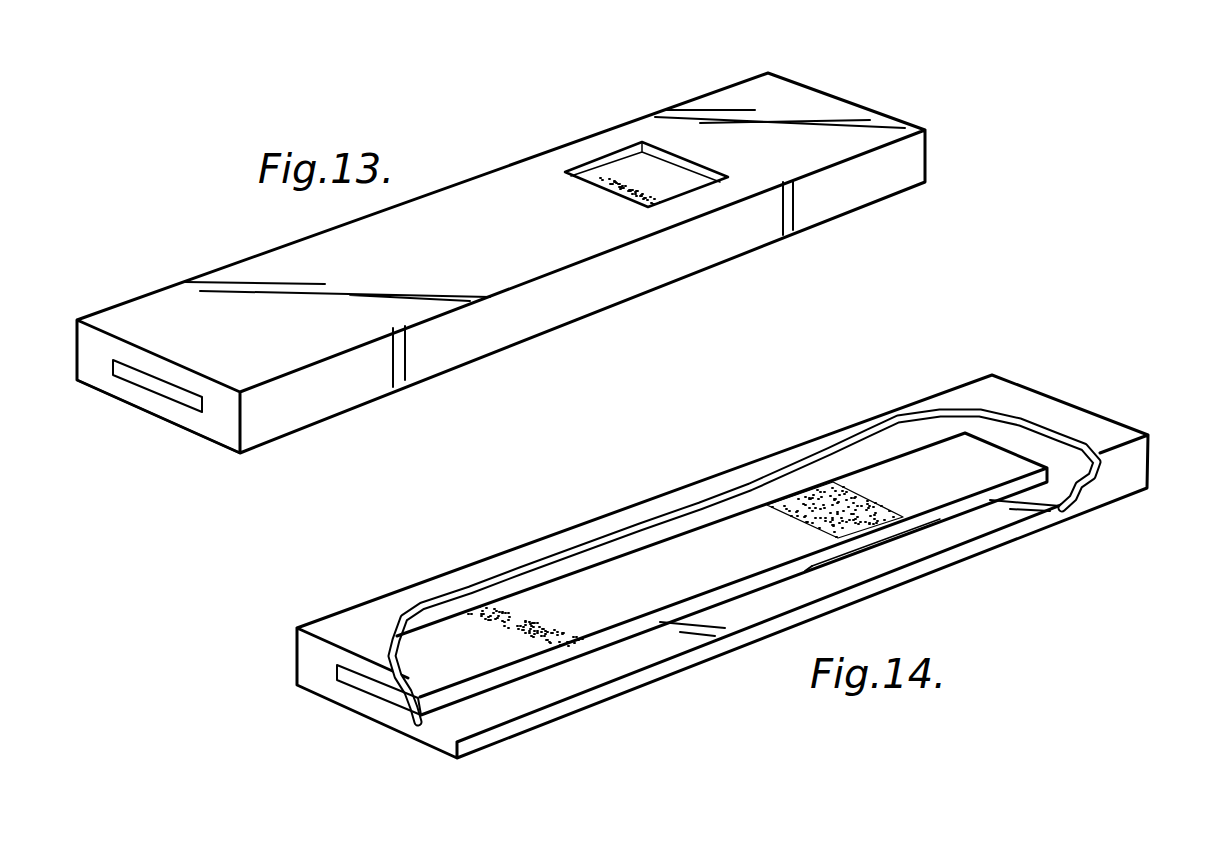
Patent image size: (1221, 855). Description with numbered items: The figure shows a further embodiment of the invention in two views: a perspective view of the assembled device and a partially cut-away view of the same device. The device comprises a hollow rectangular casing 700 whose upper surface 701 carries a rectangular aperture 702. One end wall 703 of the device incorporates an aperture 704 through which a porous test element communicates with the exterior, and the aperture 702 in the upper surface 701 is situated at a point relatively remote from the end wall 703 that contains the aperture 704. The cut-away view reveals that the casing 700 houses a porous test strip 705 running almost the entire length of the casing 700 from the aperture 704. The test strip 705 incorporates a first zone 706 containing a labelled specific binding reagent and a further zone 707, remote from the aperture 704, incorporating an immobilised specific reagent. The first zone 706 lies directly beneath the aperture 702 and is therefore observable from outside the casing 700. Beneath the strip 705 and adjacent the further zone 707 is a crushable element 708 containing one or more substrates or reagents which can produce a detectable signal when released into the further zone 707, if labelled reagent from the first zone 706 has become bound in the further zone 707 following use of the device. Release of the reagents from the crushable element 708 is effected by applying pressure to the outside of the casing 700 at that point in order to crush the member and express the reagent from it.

In FIG. 13, the rectangular casing 700 is at (928, 148).
In FIG. 14, the rectangular casing 700 is at (1148, 455).
In FIG. 13, the upper surface 701 is at (805, 105).
In FIG. 13, the rectangular aperture 702 is at (627, 163).
In FIG. 13, the end wall 703 is at (97, 350).
In FIG. 13, the aperture 704 is at (152, 383).
In FIG. 14, the aperture 704 is at (380, 693).
In FIG. 14, the porous test strip 705 is at (648, 596).
In FIG. 14, the first zone 706 is at (500, 632).
In FIG. 14, the further zone 707 is at (867, 502).
In FIG. 14, the crushable element 708 is at (903, 538).